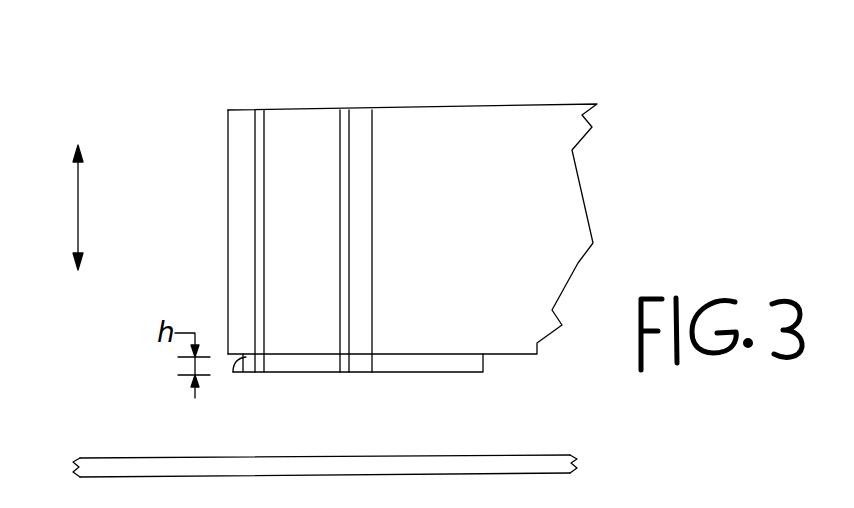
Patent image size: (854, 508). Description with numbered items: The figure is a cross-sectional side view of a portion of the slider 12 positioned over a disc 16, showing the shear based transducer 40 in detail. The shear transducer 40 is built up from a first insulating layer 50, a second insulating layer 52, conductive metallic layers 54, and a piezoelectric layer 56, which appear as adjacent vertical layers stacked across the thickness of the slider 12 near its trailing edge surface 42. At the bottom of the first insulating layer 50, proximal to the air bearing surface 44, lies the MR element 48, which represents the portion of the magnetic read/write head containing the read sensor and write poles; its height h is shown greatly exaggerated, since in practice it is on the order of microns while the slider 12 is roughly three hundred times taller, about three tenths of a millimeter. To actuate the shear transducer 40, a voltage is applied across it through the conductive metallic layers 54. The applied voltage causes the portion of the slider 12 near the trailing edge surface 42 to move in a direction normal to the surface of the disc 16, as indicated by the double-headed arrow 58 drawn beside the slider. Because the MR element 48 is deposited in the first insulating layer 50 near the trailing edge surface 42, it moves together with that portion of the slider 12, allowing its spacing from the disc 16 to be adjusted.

The slider 12 is at (412, 189).
The disc 16 is at (116, 458).
The shear based transducer 40 is at (317, 56).
The trailing edge surface 42 is at (185, 232).
The air bearing surface 44 is at (361, 385).
The MR element 48 is at (228, 354).
The first insulating layer 50 is at (238, 117).
The second insulating layer 52 is at (360, 117).
The conductive metallic layers 54 is at (260, 117).
The piezoelectric layer 56 is at (310, 184).
The arrow 58 is at (78, 210).